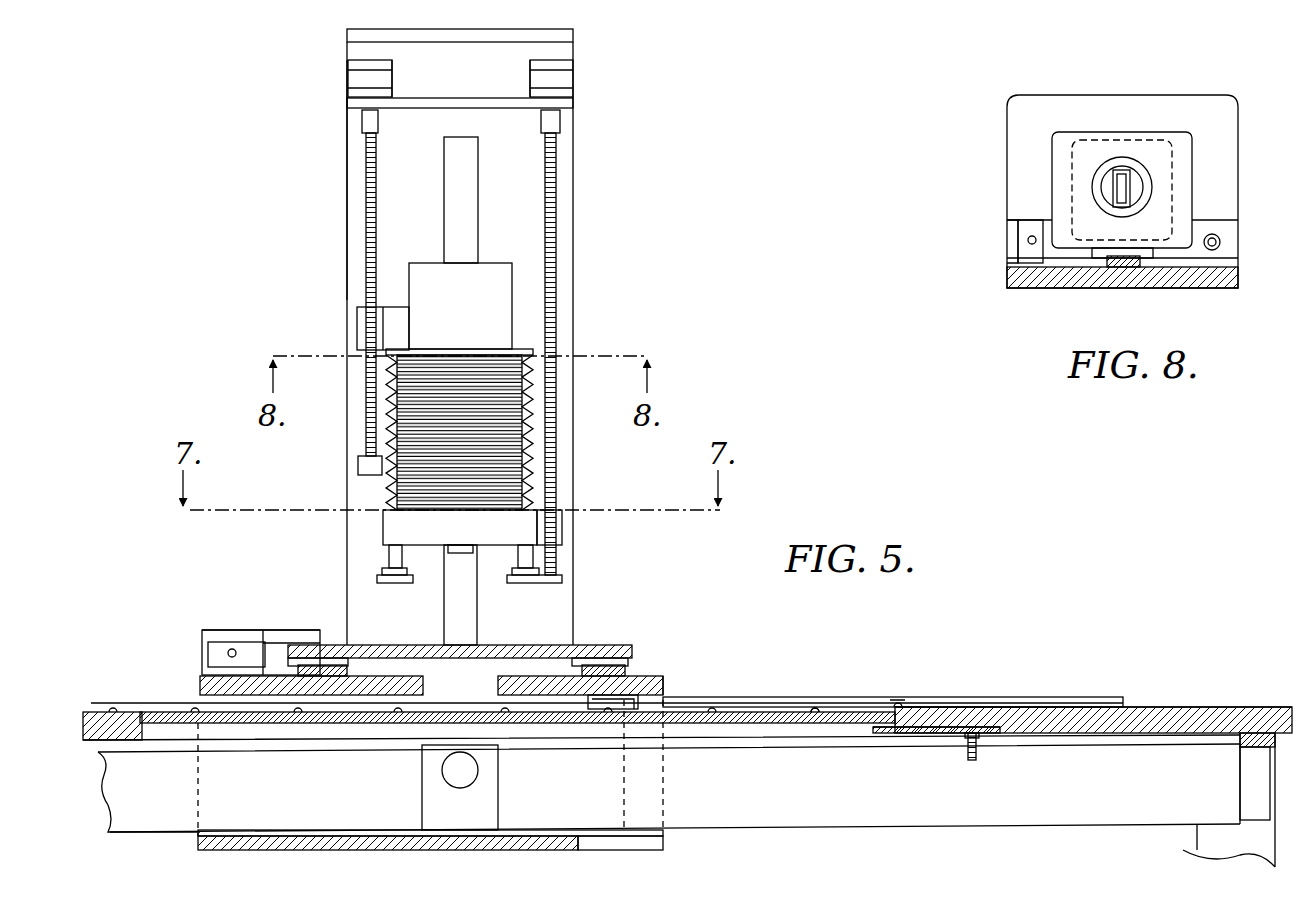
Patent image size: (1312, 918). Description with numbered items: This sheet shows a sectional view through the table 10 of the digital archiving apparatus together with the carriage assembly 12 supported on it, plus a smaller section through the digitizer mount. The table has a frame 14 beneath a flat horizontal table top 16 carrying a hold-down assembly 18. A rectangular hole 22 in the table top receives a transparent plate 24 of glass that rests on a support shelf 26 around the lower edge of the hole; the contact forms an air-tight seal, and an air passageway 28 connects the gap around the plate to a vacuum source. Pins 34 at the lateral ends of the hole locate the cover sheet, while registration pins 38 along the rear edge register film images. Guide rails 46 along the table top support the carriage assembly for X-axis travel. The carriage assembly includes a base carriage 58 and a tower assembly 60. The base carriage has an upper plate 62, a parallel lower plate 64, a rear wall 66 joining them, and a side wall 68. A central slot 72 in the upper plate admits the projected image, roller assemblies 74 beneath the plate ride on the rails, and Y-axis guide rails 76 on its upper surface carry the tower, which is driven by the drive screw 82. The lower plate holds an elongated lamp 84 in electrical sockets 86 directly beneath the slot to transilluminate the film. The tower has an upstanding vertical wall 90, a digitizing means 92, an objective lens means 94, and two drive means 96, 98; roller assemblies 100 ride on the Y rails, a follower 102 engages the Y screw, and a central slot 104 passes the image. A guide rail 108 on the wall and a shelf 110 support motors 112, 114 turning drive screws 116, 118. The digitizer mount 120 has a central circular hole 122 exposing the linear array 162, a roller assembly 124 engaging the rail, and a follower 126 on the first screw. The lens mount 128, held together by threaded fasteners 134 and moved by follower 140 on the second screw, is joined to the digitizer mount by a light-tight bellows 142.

In FIG. 5, the table 10 is at (1045, 676).
In FIG. 5, the carriage assembly 12 is at (272, 578).
In FIG. 5, the frame 14 is at (1240, 765).
In FIG. 5, the table top 16 is at (1222, 710).
In FIG. 5, the hold-down assembly 18 is at (872, 680).
In FIG. 5, the rectangular hole 22 is at (138, 706).
In FIG. 5, the transparent plate 24 is at (762, 705).
In FIG. 5, the support shelf 26 is at (880, 727).
In FIG. 5, the air passageway 28 is at (935, 733).
In FIG. 5, the pins 34 is at (900, 700).
In FIG. 5, the registration pins 38 is at (818, 705).
In FIG. 5, the guide rails 46 is at (1095, 705).
In FIG. 5, the base carriage 58 is at (205, 852).
In FIG. 5, the tower assembly 60 is at (585, 183).
In FIG. 8, the tower assembly 60 is at (1005, 130).
In FIG. 5, the upper plate 62 is at (664, 685).
In FIG. 5, the lower plate 64 is at (440, 848).
In FIG. 5, the rear wall 66 is at (205, 784).
In FIG. 5, the side wall 68 is at (655, 800).
In FIG. 5, the central slot 72 is at (430, 700).
In FIG. 5, the roller assemblies 74 is at (590, 712).
In FIG. 5, the Y-axis guide rails 76 is at (340, 666).
In FIG. 5, the drive screw 82 is at (222, 655).
In FIG. 5, the lamp 84 is at (471, 768).
In FIG. 5, the electrical sockets 86 is at (425, 800).
In FIG. 5, the upstanding vertical wall 90 is at (349, 172).
In FIG. 8, the upstanding vertical wall 90 is at (1212, 278).
In FIG. 5, the digitizing means 92 is at (515, 292).
In FIG. 8, the digitizing means 92 is at (1093, 140).
In FIG. 5, the objective lens means 94 is at (461, 558).
In FIG. 5, the first Z-axis drive means 96 is at (398, 78).
In FIG. 5, the second Z-axis drive means 98 is at (525, 82).
In FIG. 5, the roller assemblies 100 is at (328, 658).
In FIG. 5, the follower 102 is at (232, 637).
In FIG. 5, the central slot 104 is at (482, 652).
In FIG. 5, the guide rail 108 is at (470, 160).
In FIG. 8, the guide rail 108 is at (1125, 262).
In FIG. 5, the shelf 110 is at (567, 104).
In FIG. 8, the shelf 110 is at (1228, 225).
In FIG. 5, the motor 112 is at (352, 76).
In FIG. 5, the motor 114 is at (566, 78).
In FIG. 5, the drive screw 116 is at (369, 241).
In FIG. 8, the drive screw 116 is at (1030, 240).
In FIG. 5, the drive screw 118 is at (557, 208).
In FIG. 8, the drive screw 118 is at (1218, 244).
In FIG. 5, the digitizer mount 120 is at (436, 352).
In FIG. 8, the digitizer mount 120 is at (1135, 128).
In FIG. 8, the central circular hole 122 is at (1150, 187).
In FIG. 8, the roller assembly 124 is at (1155, 260).
In FIG. 5, the follower 126 is at (367, 338).
In FIG. 8, the follower 126 is at (1022, 250).
In FIG. 5, the lens mount 128 is at (390, 528).
In FIG. 5, the threaded fasteners 134 is at (398, 555).
In FIG. 5, the follower 140 is at (556, 527).
In FIG. 5, the bellows 142 is at (388, 490).
In FIG. 8, the linear array 162 is at (1117, 185).